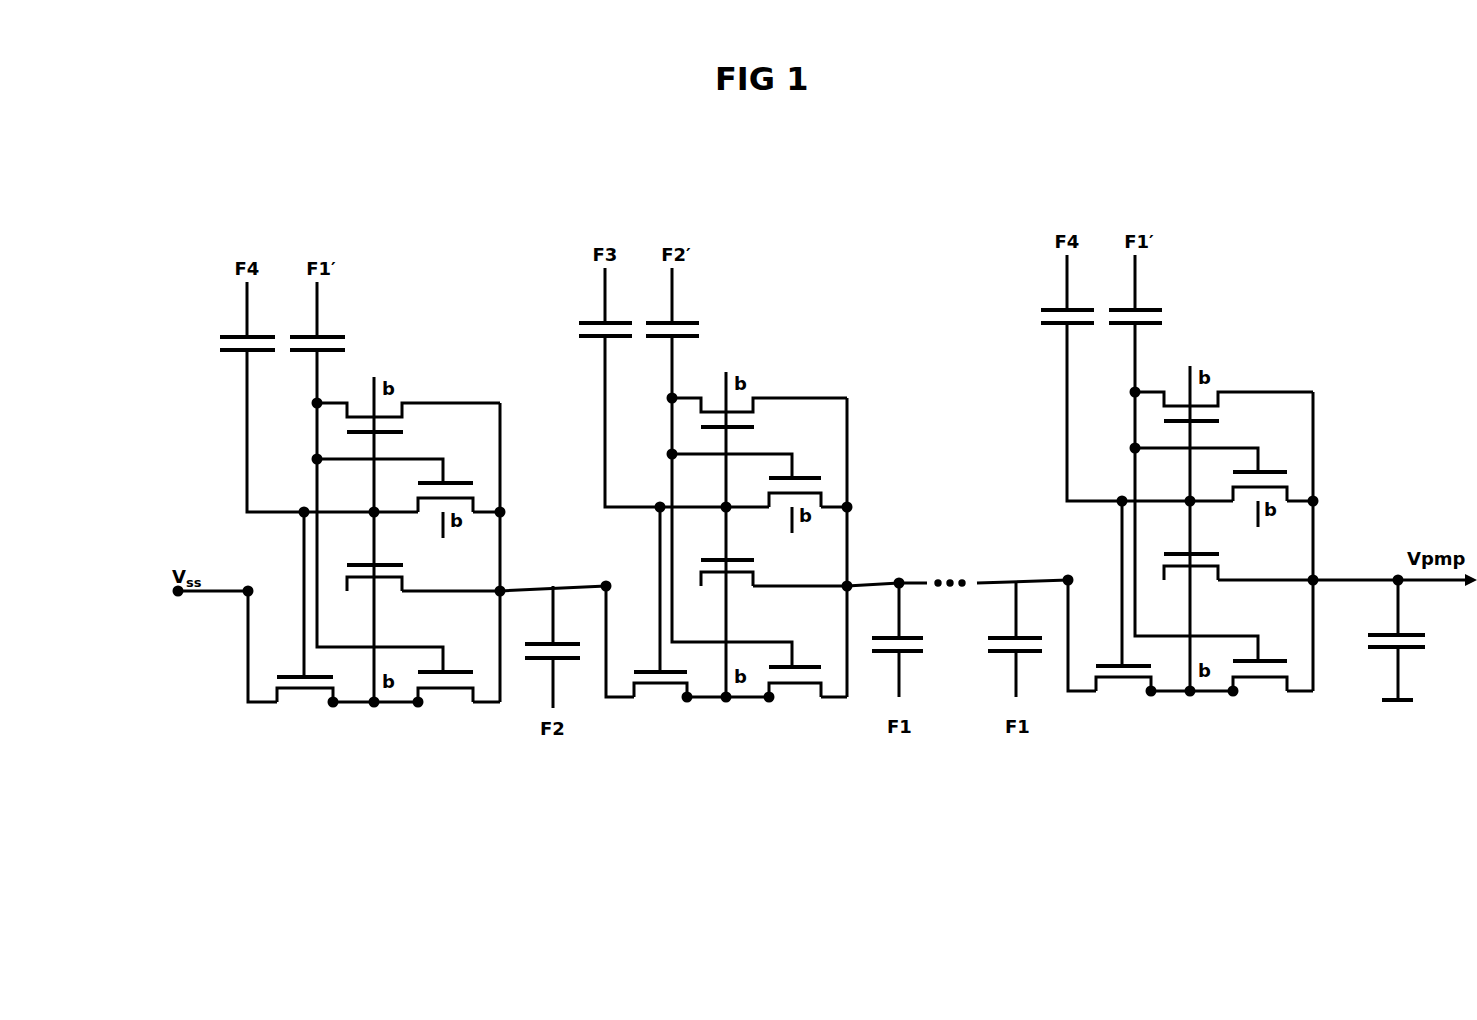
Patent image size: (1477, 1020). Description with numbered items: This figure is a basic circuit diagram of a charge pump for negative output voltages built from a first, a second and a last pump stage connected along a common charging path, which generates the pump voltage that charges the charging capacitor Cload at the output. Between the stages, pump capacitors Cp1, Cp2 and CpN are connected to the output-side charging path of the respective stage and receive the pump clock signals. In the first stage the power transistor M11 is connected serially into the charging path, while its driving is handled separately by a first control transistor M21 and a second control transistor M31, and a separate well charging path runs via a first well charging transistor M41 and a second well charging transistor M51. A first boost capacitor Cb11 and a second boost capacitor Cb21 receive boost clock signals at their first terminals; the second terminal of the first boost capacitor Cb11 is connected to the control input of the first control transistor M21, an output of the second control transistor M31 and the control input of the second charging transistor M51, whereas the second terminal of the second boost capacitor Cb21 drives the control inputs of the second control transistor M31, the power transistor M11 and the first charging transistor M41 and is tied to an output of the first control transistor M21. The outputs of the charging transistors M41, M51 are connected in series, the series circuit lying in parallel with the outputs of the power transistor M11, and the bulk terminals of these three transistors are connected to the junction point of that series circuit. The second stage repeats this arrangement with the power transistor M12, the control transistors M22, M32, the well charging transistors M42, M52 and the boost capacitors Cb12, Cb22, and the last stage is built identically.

The second boost capacitor Cb21 is at (222, 316).
The first boost capacitor Cb11 is at (344, 316).
The second control transistor M31 is at (408, 428).
The first control transistor M21 is at (453, 484).
The power transistor M11 is at (399, 577).
The first well charging transistor M41 is at (305, 708).
The second well charging transistor M51 is at (445, 706).
The pump capacitor Cp1 is at (560, 647).
The second boost capacitor Cb22 is at (580, 302).
The first boost capacitor Cb12 is at (699, 302).
The second control transistor M32 is at (759, 423).
The first control transistor M22 is at (803, 479).
The power transistor M12 is at (752, 572).
The first well charging transistor M42 is at (660, 703).
The second well charging transistor M52 is at (795, 701).
The pump capacitor Cp2 is at (905, 638).
The pump capacitor CpN is at (1022, 640).
The charging capacitor Cload is at (1417, 638).